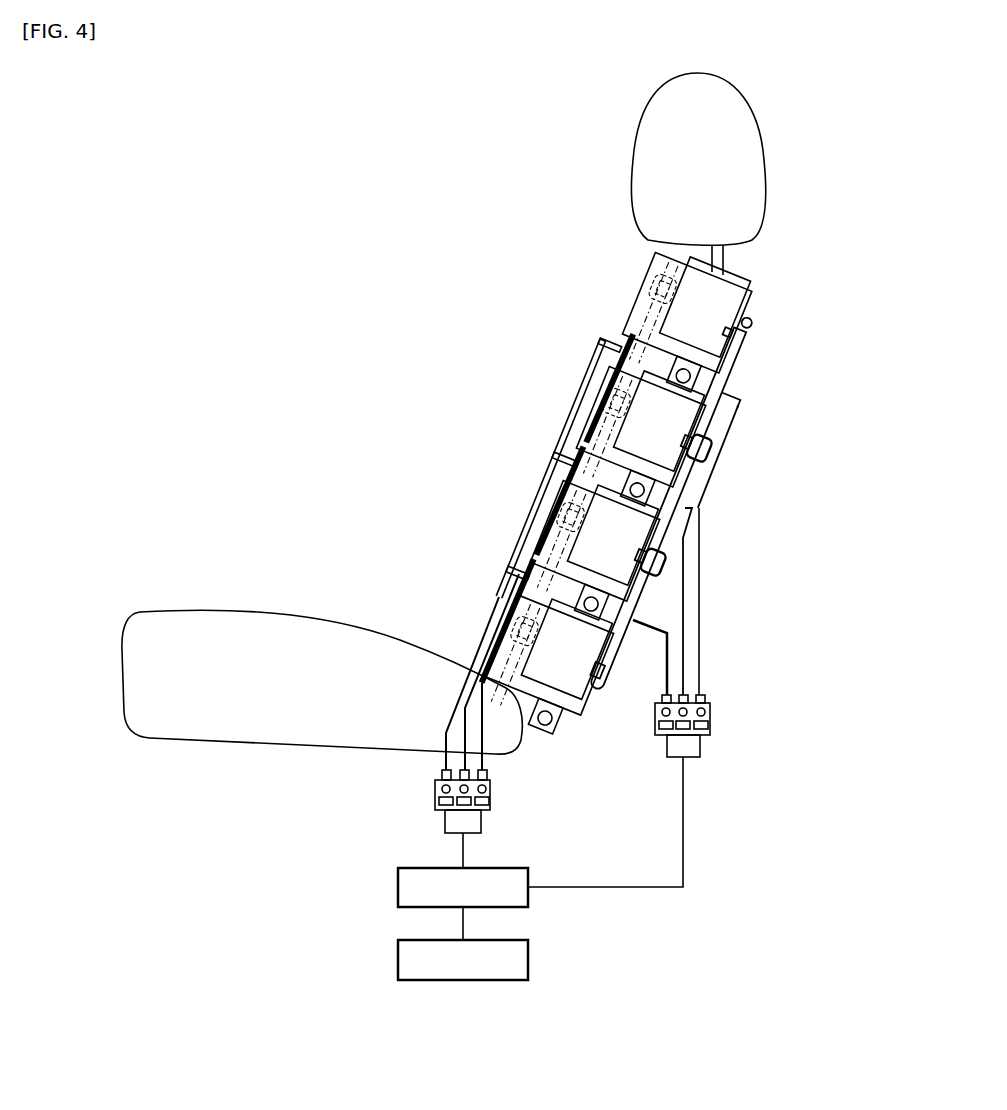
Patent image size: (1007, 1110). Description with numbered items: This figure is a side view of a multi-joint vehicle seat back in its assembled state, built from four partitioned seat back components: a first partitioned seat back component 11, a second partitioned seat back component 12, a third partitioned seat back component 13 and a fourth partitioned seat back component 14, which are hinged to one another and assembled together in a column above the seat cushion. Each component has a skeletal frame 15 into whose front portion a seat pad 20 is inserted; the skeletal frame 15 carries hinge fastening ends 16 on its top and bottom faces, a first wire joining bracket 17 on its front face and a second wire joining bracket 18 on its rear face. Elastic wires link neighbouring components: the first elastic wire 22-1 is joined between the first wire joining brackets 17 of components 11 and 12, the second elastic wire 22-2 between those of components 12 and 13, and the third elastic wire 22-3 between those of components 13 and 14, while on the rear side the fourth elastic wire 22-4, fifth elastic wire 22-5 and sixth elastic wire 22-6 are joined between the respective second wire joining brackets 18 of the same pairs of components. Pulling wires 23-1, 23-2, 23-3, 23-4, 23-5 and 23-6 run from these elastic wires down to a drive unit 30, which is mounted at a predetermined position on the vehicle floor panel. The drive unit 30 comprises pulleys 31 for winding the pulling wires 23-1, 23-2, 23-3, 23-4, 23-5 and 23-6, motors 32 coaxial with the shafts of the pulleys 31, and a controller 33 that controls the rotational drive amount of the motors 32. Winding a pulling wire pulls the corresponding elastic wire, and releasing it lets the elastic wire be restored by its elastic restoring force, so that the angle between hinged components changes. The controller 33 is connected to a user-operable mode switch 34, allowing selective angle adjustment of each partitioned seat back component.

The first partitioned seat back component 11 is at (641, 284).
The second partitioned seat back component 12 is at (599, 388).
The third partitioned seat back component 13 is at (556, 498).
The fourth partitioned seat back component 14 is at (498, 628).
The skeletal frame 15 is at (740, 286).
The hinge fastening end 16 is at (745, 400).
The first wire joining bracket 17 is at (658, 300).
The second wire joining bracket 18 is at (752, 324).
The seat pad 20 is at (712, 268).
The first elastic wire 22-1 is at (623, 337).
The second elastic wire 22-2 is at (590, 437).
The third elastic wire 22-3 is at (532, 562).
The fourth elastic wire 22-4 is at (740, 363).
The fifth elastic wire 22-5 is at (707, 467).
The sixth elastic wire 22-6 is at (653, 593).
The first pulling wire 23-1 is at (603, 343).
The second pulling wire 23-2 is at (568, 457).
The third pulling wire 23-3 is at (512, 582).
The fourth pulling wire 23-4 is at (737, 427).
The fifth pulling wire 23-5 is at (685, 540).
The sixth pulling wire 23-6 is at (665, 668).
The drive unit 30 is at (318, 763).
The pulley 31 is at (437, 786).
The motor 32 is at (437, 800).
The controller 33 is at (398, 887).
The mode switch 34 is at (398, 960).